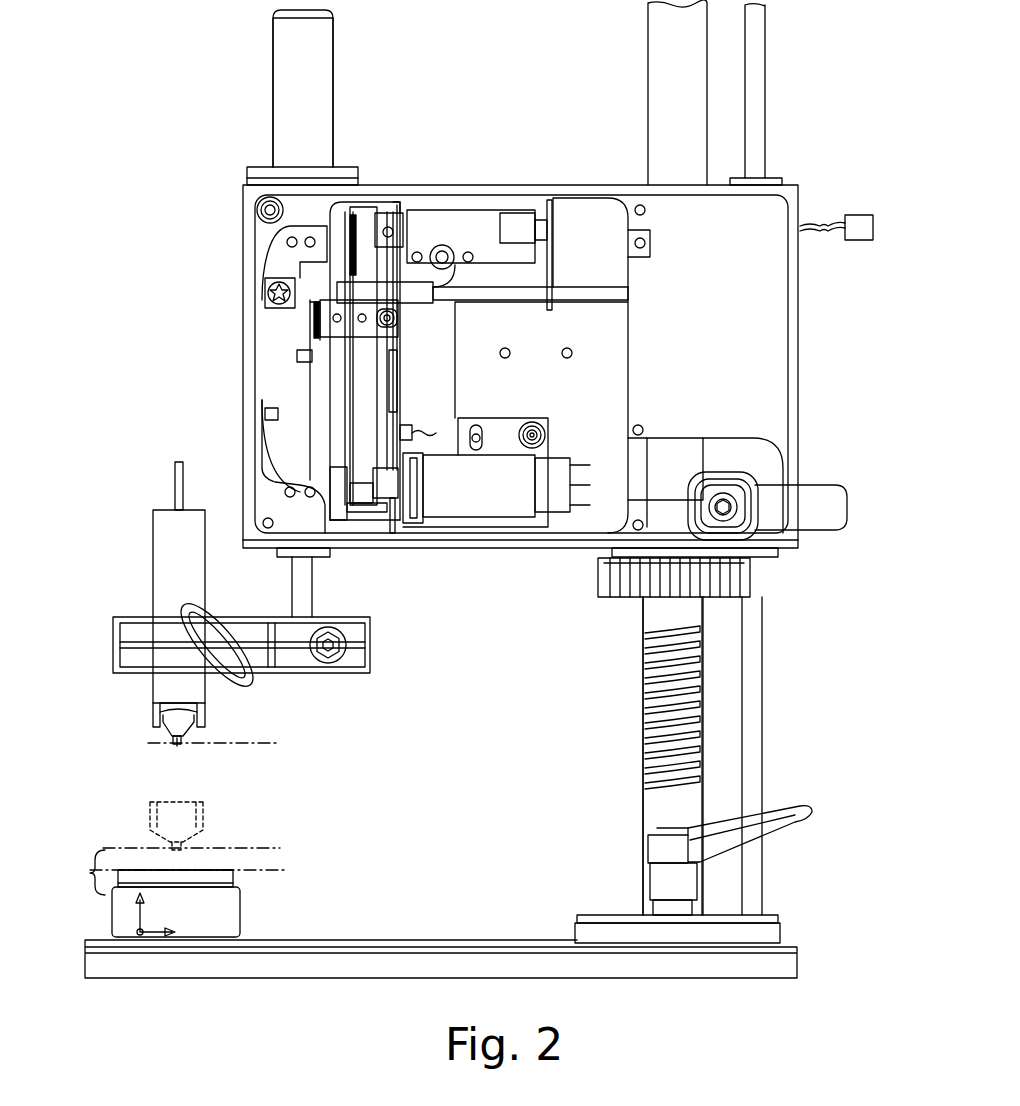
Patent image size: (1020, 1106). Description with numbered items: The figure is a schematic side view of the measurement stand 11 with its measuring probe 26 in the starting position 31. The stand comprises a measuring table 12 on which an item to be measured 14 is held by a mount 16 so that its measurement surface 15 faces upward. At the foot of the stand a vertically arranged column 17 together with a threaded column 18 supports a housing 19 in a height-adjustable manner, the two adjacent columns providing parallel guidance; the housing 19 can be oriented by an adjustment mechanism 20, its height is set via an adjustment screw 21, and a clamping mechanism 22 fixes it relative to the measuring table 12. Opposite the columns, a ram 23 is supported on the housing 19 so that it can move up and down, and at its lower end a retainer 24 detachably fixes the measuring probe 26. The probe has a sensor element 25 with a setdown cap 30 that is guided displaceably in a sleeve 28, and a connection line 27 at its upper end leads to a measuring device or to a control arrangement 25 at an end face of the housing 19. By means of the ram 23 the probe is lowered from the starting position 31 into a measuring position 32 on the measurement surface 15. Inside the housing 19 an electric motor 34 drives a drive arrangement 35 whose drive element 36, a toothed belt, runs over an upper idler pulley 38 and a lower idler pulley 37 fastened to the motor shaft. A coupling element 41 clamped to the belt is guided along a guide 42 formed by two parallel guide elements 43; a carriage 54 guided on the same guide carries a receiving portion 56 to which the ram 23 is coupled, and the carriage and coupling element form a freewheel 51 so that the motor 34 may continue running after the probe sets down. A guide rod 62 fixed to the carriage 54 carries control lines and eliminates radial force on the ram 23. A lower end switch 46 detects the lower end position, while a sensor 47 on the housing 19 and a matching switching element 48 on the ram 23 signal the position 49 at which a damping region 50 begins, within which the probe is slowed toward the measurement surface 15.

The measurement stand 11 is at (508, 746).
The measuring table 12 is at (388, 942).
The item to be measured 14 is at (212, 870).
The measurement surface 15 is at (150, 862).
The mount 16 is at (235, 916).
The column 17 is at (752, 696).
The threaded column 18 is at (655, 796).
The housing 19 is at (466, 176).
The adjustment mechanism 20 is at (616, 636).
The adjustment screw 21 is at (600, 578).
The clamping mechanism 22 is at (822, 552).
The ram 23 is at (312, 598).
The retainer 24 is at (370, 651).
The sensor element 25 is at (859, 219).
The measuring probe 26 is at (160, 570).
The connection line 27 is at (176, 489).
The sleeve 28 is at (158, 714).
The setdown cap 30 is at (174, 748).
The starting position 31 is at (252, 733).
The measuring position 32 is at (260, 860).
The electric motor 34 is at (496, 472).
The drive arrangement 35 is at (428, 558).
The drive element 36 is at (362, 240).
The lower idler pulley 37 is at (388, 500).
The upper idler pulley 38 is at (387, 226).
The coupling element 41 is at (265, 414).
The guide 42 is at (350, 146).
The guide elements 43 is at (408, 203).
The lower end switch 46 is at (406, 424).
The sensor 47 is at (312, 378).
The switching element 48 is at (340, 332).
The position 49 is at (254, 838).
The damping region 50 is at (82, 872).
The freewheel 51 is at (300, 324).
The carriage 54 is at (300, 298).
The receiving portion 56 is at (318, 310).
The guide rod 62 is at (586, 294).